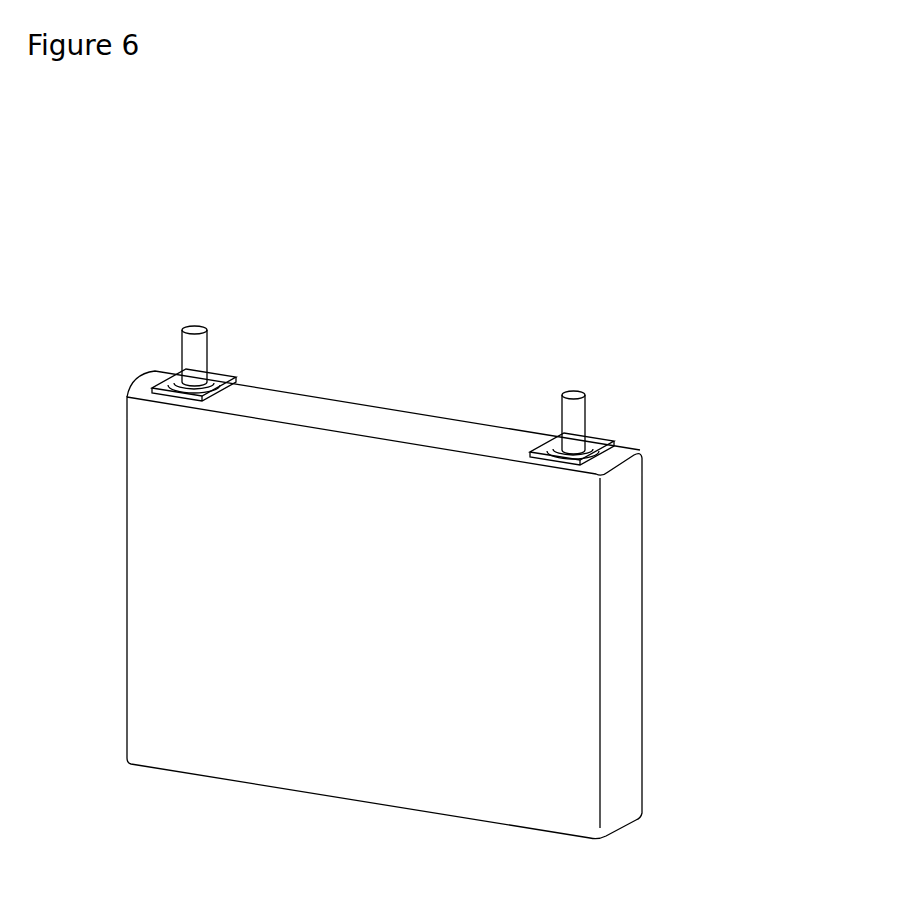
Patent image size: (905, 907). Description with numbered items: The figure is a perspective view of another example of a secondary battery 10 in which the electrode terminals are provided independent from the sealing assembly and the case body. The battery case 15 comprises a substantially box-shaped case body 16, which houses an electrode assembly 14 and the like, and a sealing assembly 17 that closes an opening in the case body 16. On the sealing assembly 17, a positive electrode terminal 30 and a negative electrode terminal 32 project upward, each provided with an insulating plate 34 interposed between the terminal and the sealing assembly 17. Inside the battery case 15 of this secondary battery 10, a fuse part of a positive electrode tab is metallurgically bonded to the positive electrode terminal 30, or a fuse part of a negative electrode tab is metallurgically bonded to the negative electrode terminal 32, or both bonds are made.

The secondary battery 10 is at (667, 308).
The electrode assembly 14 is at (543, 643).
The battery case 15 is at (724, 482).
The case body 16 is at (628, 575).
The sealing assembly 17 is at (642, 453).
The positive electrode terminal 30 is at (198, 330).
The negative electrode terminal 32 is at (578, 395).
The insulating plate 34 is at (223, 373).